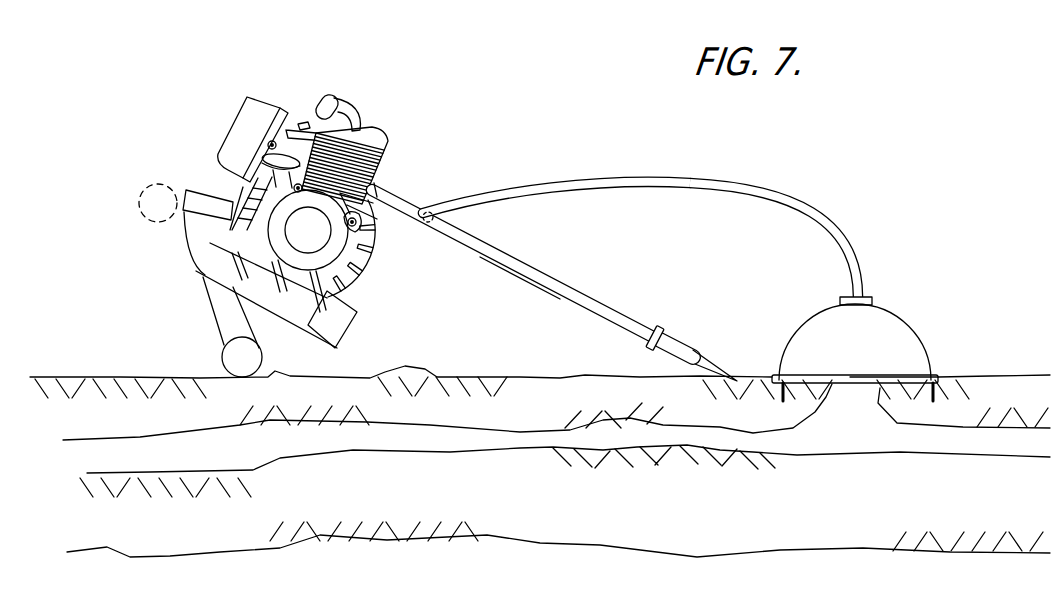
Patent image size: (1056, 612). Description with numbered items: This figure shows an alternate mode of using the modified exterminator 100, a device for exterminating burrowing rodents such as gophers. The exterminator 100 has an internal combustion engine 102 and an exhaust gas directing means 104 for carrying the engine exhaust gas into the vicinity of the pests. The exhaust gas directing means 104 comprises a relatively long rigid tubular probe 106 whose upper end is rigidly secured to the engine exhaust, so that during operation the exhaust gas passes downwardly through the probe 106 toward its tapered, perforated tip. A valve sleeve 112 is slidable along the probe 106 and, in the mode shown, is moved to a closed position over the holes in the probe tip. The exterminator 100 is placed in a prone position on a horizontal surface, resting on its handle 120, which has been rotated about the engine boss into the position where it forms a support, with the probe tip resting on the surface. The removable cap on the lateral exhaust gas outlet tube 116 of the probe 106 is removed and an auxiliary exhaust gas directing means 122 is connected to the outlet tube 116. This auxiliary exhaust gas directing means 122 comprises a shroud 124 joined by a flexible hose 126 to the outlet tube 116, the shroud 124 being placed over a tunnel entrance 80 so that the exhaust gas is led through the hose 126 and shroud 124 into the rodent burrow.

The tunnel entrance 80 is at (893, 377).
The modified exterminator 100 is at (418, 104).
The internal combustion engine 102 is at (250, 96).
The exhaust gas directing means 104 is at (607, 294).
The rigid tubular probe 106 is at (528, 284).
The valve sleeve 112 is at (684, 333).
The lateral exhaust gas outlet tube 116 is at (427, 224).
The handle 120 is at (222, 346).
The auxiliary exhaust gas directing means 122 is at (642, 166).
The shroud 124 is at (921, 329).
The flexible hose 126 is at (787, 185).